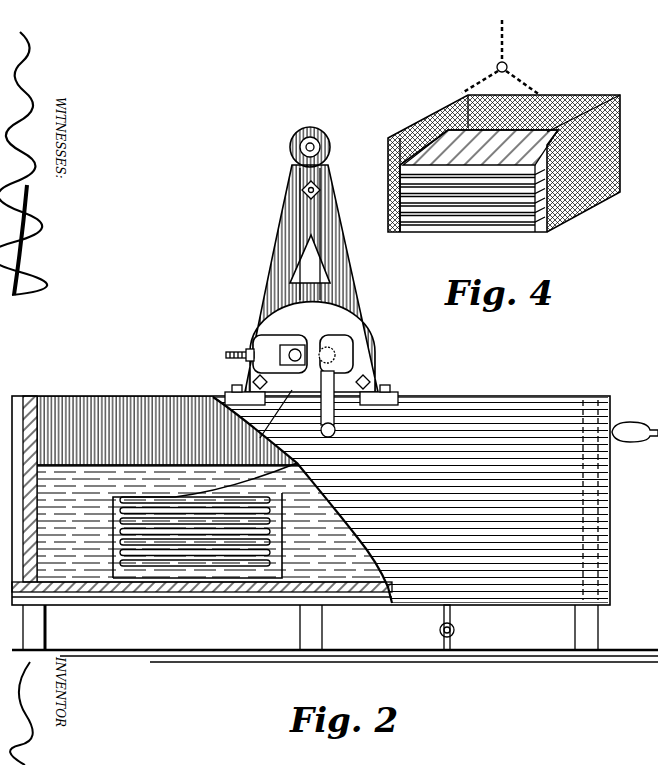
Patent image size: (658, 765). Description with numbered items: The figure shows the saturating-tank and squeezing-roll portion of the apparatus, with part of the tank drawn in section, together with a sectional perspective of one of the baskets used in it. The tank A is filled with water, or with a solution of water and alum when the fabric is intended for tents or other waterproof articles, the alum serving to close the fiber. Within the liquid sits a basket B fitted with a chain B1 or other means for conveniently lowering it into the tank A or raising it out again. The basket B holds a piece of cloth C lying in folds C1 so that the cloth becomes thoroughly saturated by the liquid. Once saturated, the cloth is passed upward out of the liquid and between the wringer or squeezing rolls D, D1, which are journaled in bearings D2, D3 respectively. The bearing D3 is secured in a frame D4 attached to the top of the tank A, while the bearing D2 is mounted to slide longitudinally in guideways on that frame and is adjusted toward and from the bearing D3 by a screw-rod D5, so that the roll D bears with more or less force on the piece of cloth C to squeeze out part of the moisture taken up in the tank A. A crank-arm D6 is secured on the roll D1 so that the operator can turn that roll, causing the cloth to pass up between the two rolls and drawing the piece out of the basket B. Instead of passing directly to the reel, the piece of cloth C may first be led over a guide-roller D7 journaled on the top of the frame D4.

In FIG. 2, the tank A is at (493, 405).
In FIG. 2, the basket B is at (163, 592).
In FIG. 4, the basket B is at (412, 133).
In FIG. 4, the chain B1 is at (507, 55).
In FIG. 2, the piece of cloth C is at (238, 433).
In FIG. 4, the piece of cloth C is at (520, 143).
In FIG. 2, the folds C1 is at (248, 562).
In FIG. 4, the folds C1 is at (507, 217).
In FIG. 2, the wringer or squeezing roll D is at (290, 340).
In FIG. 2, the wringer or squeezing roll D1 is at (337, 340).
In FIG. 2, the bearing D2 is at (287, 349).
In FIG. 2, the bearing D3 is at (347, 353).
In FIG. 2, the frame D4 is at (345, 292).
In FIG. 2, the screw-rod D5 is at (245, 356).
In FIG. 2, the crank-arm D6 is at (370, 381).
In FIG. 2, the guide-roller D7 is at (318, 140).